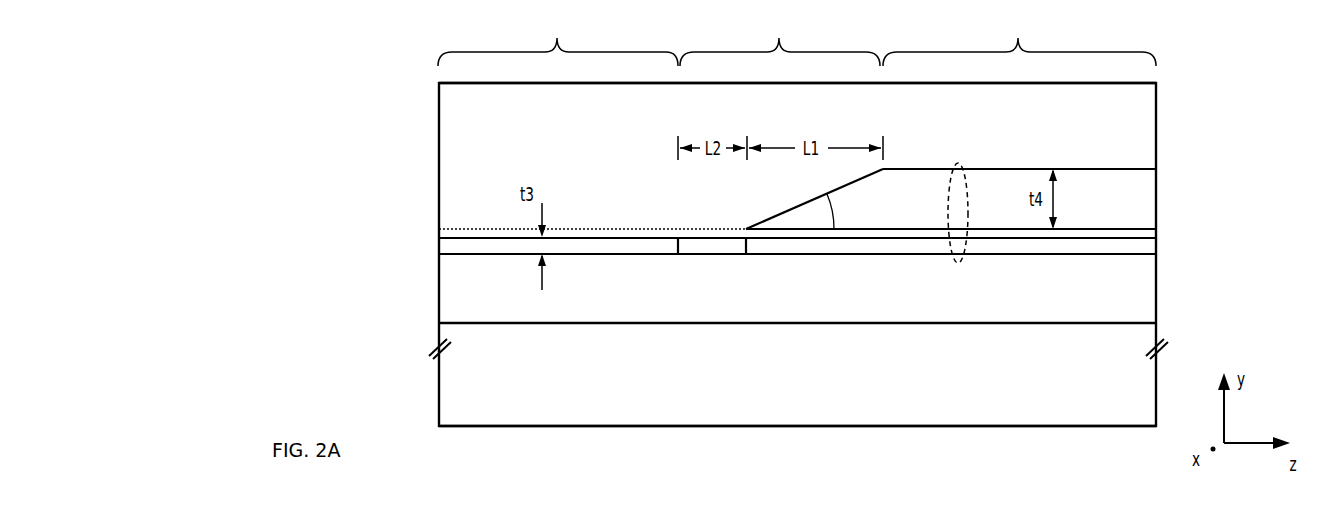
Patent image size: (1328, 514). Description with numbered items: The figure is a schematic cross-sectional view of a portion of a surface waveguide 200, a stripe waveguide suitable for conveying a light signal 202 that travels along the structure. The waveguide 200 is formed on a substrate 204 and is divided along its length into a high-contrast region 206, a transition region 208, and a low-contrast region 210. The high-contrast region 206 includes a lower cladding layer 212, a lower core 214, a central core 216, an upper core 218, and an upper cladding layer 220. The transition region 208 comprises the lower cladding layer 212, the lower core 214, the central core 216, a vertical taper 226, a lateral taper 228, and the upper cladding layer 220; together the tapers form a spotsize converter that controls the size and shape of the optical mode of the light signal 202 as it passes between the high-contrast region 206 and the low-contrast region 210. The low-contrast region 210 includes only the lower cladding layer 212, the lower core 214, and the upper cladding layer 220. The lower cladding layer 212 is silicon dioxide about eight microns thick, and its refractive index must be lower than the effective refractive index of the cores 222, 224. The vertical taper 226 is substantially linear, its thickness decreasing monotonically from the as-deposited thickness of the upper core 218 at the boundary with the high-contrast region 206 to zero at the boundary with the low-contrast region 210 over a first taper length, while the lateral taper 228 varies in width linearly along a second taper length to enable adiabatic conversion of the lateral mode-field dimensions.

The waveguide 200 is at (346, 88).
The light signal 202 is at (1172, 220).
The substrate 204 is at (1105, 417).
The high-contrast region 206 is at (1019, 35).
The transition region 208 is at (780, 35).
The low-contrast region 210 is at (558, 35).
The lower cladding layer 212 is at (1105, 307).
The lower core 214 is at (439, 245).
The central core 216 is at (780, 232).
The upper core 218 is at (1105, 217).
The upper cladding layer 220 is at (1105, 134).
The core 222 is at (959, 165).
The core 224 is at (592, 244).
The vertical taper 226 is at (770, 195).
The lateral taper 228 is at (710, 244).